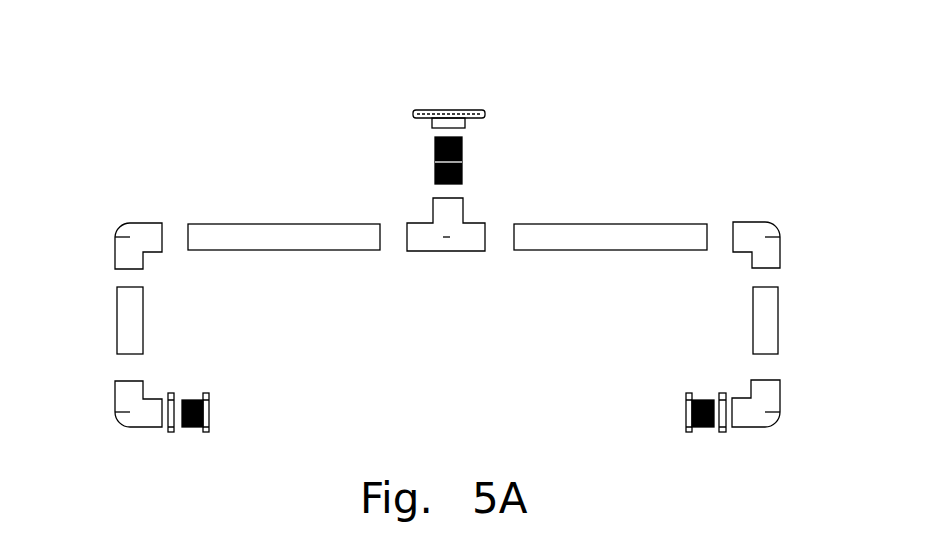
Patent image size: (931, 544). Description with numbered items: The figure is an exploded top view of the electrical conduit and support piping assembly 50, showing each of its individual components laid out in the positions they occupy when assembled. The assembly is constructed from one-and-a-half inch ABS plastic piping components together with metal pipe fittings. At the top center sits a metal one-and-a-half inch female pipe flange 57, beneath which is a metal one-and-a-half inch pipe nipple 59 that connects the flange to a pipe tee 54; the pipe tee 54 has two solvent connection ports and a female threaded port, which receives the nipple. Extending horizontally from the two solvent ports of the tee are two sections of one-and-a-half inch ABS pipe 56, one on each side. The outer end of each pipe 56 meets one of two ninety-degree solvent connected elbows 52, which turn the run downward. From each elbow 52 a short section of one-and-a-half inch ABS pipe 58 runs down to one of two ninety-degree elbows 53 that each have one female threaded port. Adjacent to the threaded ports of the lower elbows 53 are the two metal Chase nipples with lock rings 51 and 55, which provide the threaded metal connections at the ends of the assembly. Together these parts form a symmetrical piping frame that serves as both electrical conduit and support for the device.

The electrical conduit and support piping assembly 50 is at (525, 128).
The metal Chase nipple with lock ring 51 is at (205, 430).
The 90 degree solvent connected elbow 52 is at (130, 237).
The 90 degree elbow with one female threaded port 53 is at (130, 413).
The pipe tee 54 is at (440, 252).
The metal Chase nipple with lock ring 55 is at (174, 430).
The section of 1½ inch ABS pipe 56 is at (233, 225).
The metal 1½ inch female pipe flange 57 is at (443, 110).
The short section of 1½ inch ABS pipe 58 is at (116, 312).
The metal 1½ inch pipe nipple 59 is at (430, 162).